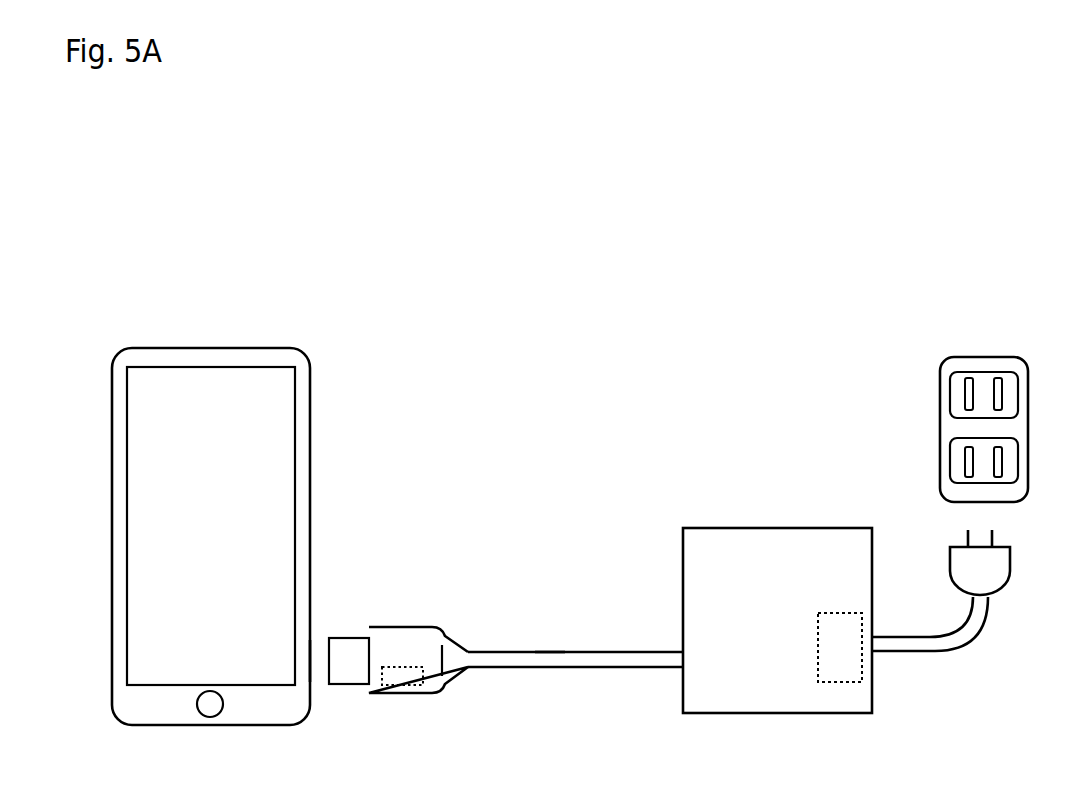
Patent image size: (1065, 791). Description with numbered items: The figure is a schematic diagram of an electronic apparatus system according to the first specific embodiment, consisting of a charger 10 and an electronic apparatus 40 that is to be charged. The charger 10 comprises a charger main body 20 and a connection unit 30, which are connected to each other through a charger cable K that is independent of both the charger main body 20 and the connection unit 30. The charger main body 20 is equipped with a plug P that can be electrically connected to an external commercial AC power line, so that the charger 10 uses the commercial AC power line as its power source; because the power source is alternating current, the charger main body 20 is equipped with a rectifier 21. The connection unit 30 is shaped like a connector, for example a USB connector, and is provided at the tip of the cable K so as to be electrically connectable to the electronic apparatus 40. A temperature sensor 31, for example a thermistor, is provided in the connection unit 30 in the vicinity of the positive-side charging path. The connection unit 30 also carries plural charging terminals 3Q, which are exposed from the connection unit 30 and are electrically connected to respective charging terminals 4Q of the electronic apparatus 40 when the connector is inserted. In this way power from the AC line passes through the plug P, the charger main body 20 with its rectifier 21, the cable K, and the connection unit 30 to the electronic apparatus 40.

The electronic apparatus 40 is at (186, 348).
The charging terminals of the electronic apparatus 4Q is at (312, 658).
The charging terminals 3Q is at (347, 648).
The connection unit 30 is at (400, 638).
The temperature sensor 31 is at (412, 687).
The charger 10 is at (625, 652).
The charger cable K is at (548, 652).
The charger main body 20 is at (790, 543).
The rectifier 21 is at (843, 660).
The plug P is at (995, 562).
The external commercial AC power line AC is at (964, 443).